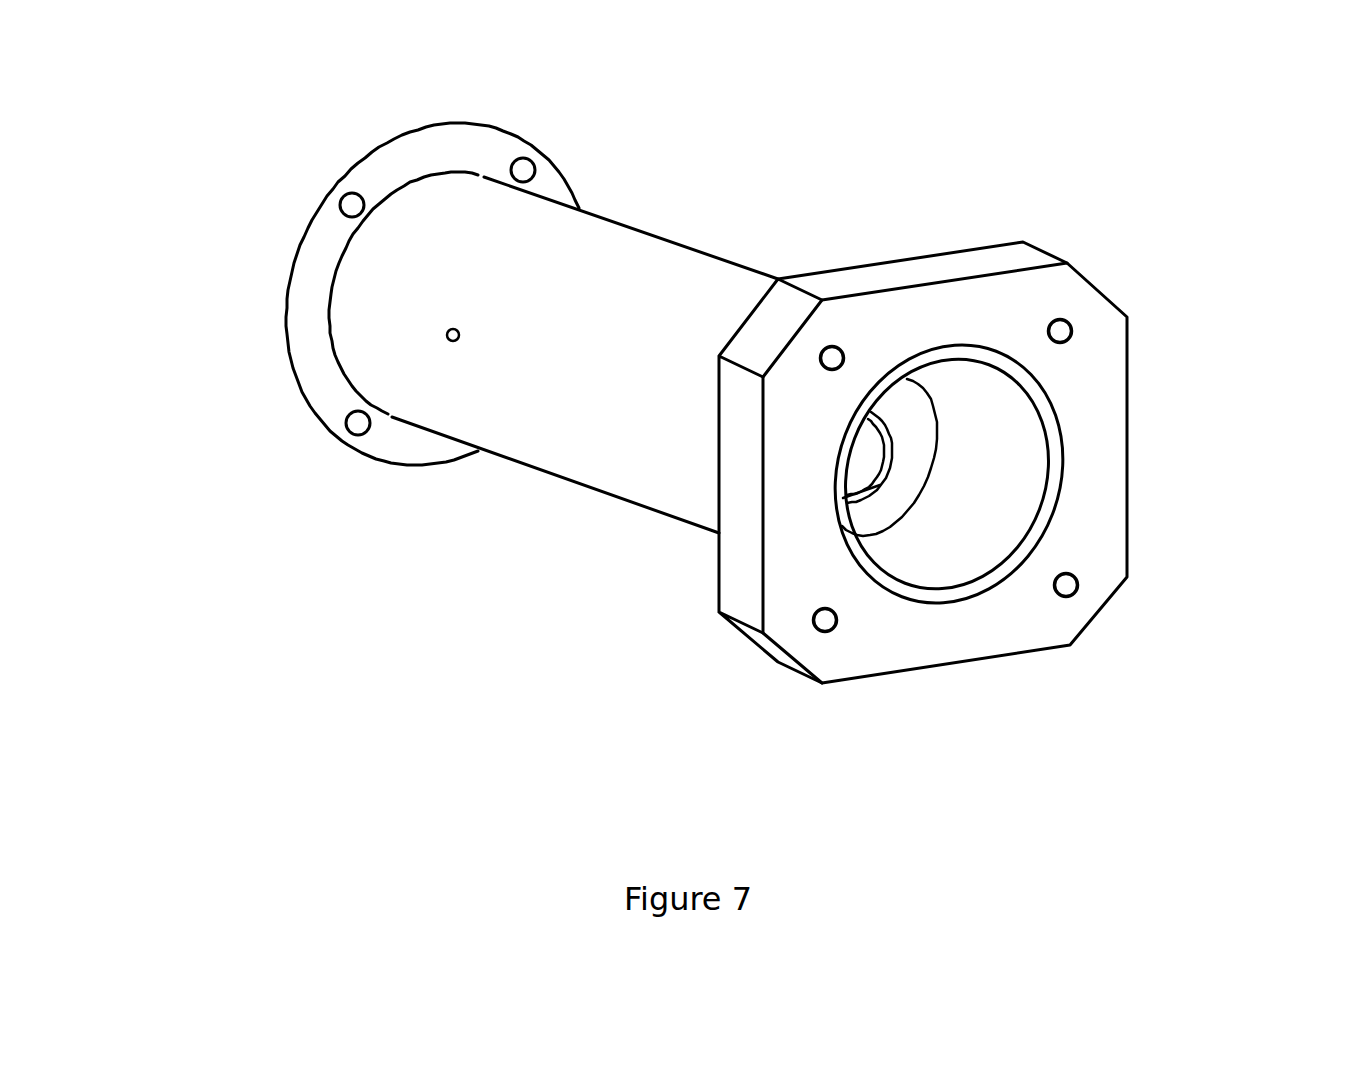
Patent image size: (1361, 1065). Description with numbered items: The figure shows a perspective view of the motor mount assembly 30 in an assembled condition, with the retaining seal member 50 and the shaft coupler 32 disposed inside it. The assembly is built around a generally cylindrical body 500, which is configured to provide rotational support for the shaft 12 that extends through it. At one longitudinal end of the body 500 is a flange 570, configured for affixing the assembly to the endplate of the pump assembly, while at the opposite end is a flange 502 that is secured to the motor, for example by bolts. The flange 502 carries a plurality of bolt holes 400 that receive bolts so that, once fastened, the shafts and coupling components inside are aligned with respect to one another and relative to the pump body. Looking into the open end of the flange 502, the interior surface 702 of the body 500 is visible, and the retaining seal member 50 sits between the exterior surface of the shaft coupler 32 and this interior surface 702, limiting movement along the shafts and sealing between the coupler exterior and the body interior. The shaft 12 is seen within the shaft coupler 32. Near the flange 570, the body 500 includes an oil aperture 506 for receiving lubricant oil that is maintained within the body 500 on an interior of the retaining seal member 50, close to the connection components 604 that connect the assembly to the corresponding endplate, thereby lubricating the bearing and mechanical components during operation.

The motor mount assembly 30 is at (461, 314).
The flange 570 is at (287, 320).
The connection components 604 is at (293, 378).
The body 500 is at (594, 335).
The oil aperture 506 is at (450, 343).
The flange 502 is at (763, 612).
The bolt holes 400 is at (1058, 332).
The interior surface 702 is at (1028, 495).
The retaining seal member 50 is at (903, 490).
The shaft coupler 32 is at (872, 480).
The shaft 12 is at (862, 448).